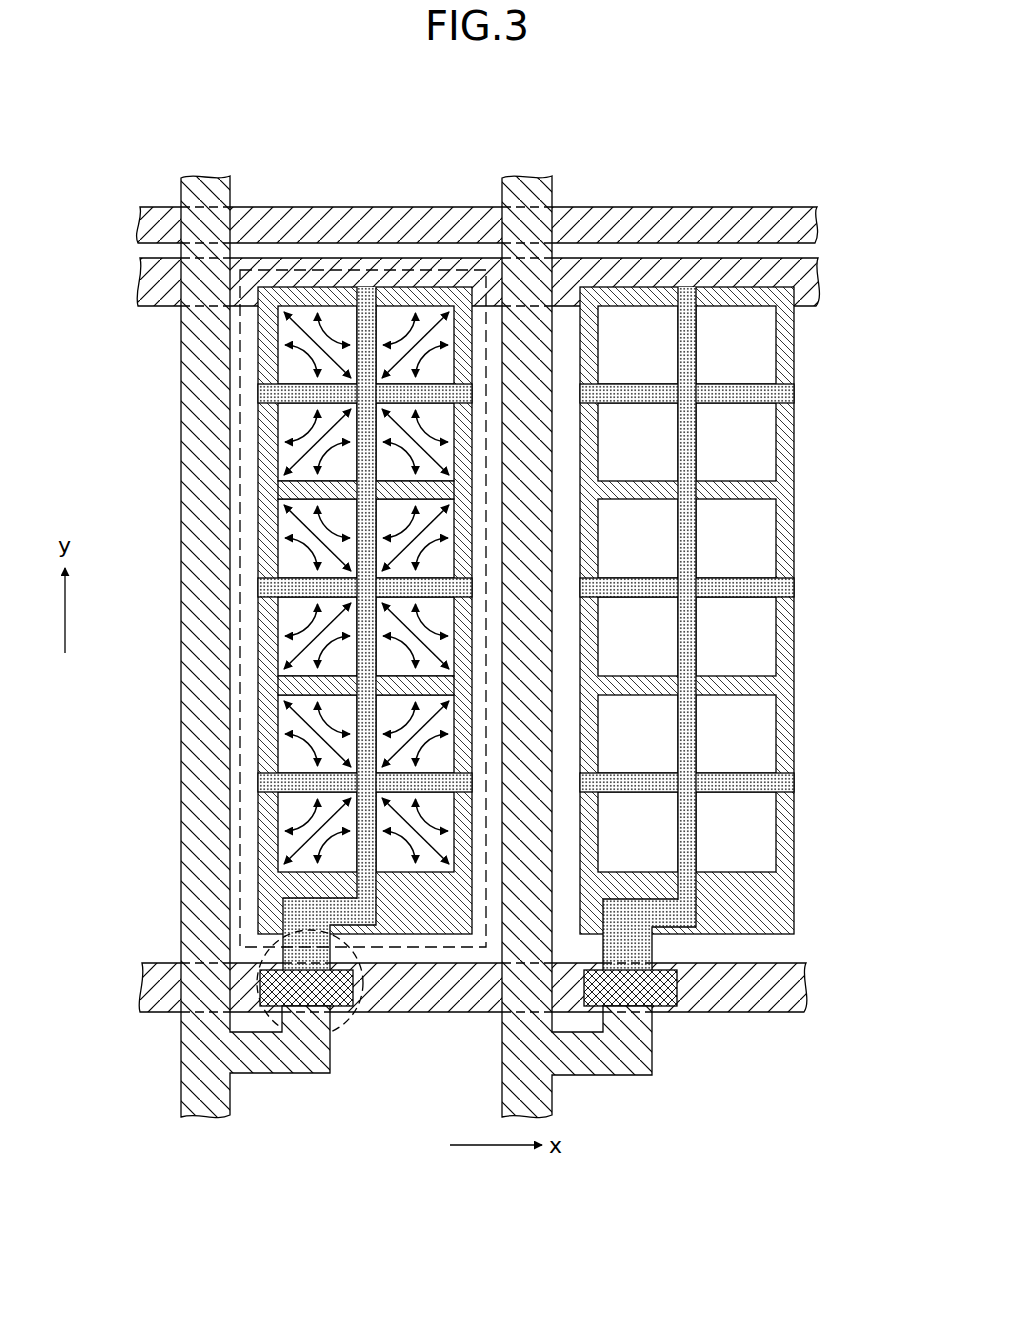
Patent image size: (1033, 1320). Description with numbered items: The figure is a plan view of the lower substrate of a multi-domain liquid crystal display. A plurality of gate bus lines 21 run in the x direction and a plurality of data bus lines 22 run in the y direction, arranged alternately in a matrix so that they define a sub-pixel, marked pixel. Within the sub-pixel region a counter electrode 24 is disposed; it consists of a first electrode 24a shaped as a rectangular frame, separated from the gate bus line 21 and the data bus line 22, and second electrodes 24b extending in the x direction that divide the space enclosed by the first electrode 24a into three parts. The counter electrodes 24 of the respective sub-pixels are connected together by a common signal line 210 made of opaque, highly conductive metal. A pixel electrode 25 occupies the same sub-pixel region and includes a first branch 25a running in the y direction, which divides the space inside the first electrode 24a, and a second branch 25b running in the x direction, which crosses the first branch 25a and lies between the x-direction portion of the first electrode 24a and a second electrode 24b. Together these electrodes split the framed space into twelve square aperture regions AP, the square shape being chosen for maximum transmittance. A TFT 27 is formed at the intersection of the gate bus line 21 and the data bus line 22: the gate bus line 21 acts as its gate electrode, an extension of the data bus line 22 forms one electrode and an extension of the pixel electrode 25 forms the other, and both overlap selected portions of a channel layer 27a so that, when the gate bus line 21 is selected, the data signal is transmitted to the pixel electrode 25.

The gate bus line 21 is at (810, 223).
The common signal line 210 is at (810, 283).
The data bus line 22 is at (223, 1098).
The counter electrode 24 is at (116, 443).
The first electrode 24a is at (273, 458).
The second electrode 24b is at (283, 491).
The pixel electrode 25 is at (116, 650).
The first branch 25a is at (365, 647).
The second branch 25b is at (297, 785).
The TFT 27 is at (341, 1040).
The channel layer 27a is at (348, 998).
The aperture region AP is at (312, 305).
The sub- pixel is at (411, 268).